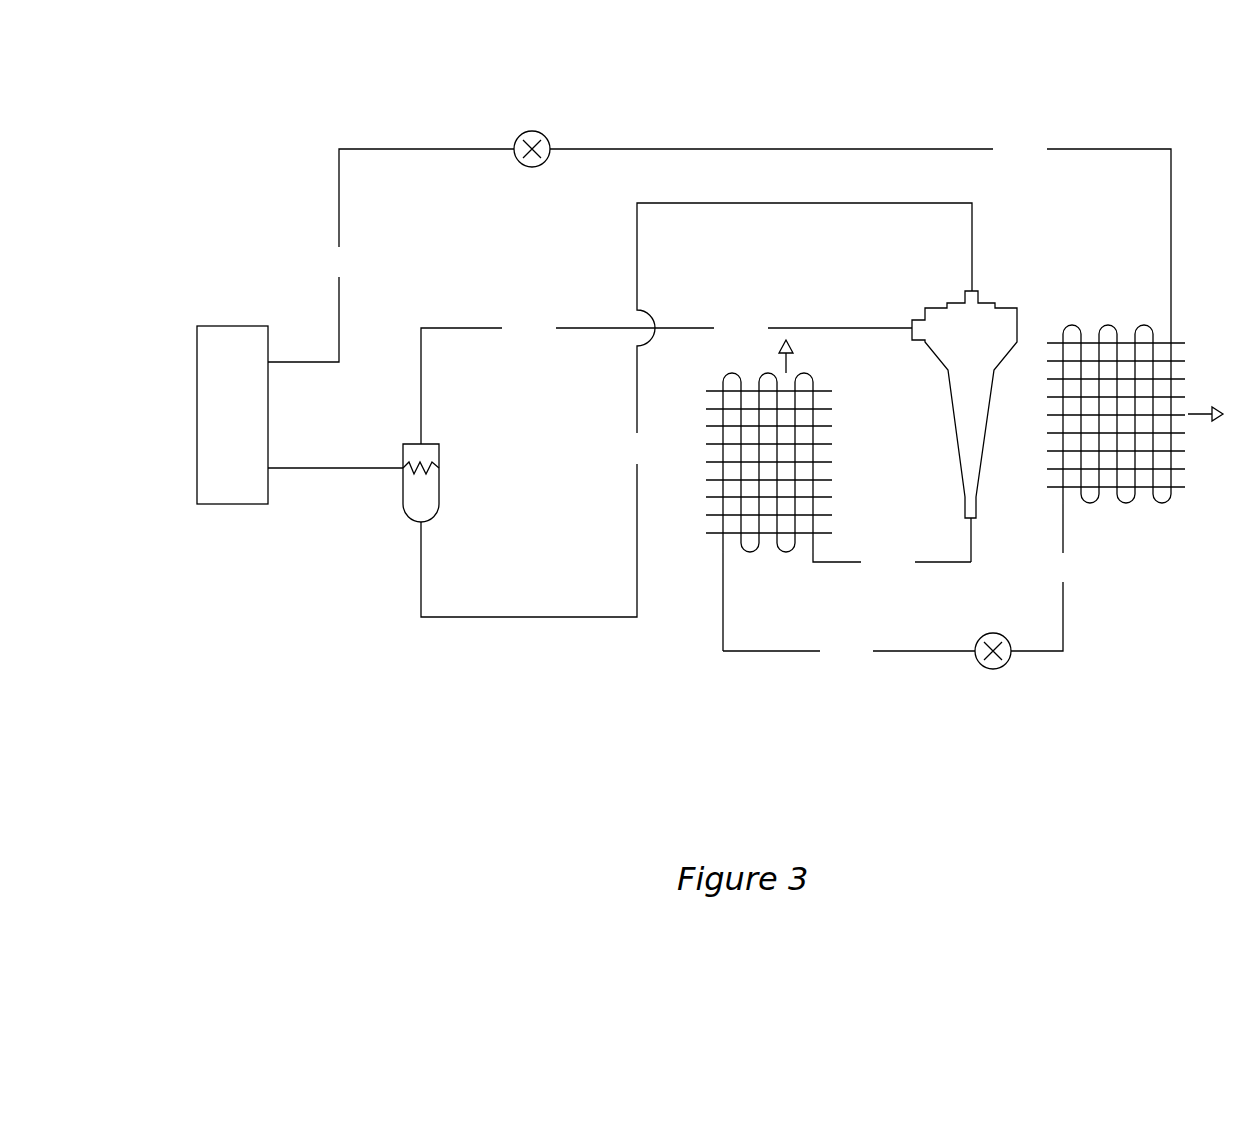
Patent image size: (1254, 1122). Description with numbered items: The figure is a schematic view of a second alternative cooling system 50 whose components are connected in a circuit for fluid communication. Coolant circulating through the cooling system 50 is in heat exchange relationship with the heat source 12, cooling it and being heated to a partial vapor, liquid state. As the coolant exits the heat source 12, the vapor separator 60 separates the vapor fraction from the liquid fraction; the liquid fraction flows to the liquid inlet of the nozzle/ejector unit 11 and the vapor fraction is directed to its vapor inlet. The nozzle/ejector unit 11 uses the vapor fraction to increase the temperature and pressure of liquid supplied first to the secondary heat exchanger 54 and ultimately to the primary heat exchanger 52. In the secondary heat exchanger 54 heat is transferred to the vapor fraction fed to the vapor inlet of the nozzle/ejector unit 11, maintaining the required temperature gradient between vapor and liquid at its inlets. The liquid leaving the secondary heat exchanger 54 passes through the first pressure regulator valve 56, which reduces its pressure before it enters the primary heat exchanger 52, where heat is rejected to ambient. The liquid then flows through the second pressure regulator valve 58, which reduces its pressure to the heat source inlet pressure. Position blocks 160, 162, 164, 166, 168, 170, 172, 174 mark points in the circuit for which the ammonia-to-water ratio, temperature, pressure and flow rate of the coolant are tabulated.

The nozzle/ejector unit 11 is at (948, 392).
The heat source 12 is at (249, 326).
The second alternative cooling system 50 is at (300, 653).
The primary heat exchanger 52 is at (1125, 325).
The secondary heat exchanger 54 is at (770, 552).
The first pressure regulator valve 56 is at (1000, 666).
The second pressure regulator valve 58 is at (524, 133).
The vapor separator 60 is at (430, 447).
The position block 160 is at (391, 255).
The position block 162 is at (567, 378).
The position block 164 is at (813, 328).
The position block 166 is at (696, 410).
The position block 168 is at (916, 562).
The position block 170 is at (849, 650).
The position block 172 is at (1049, 602).
The position block 174 is at (860, 234).